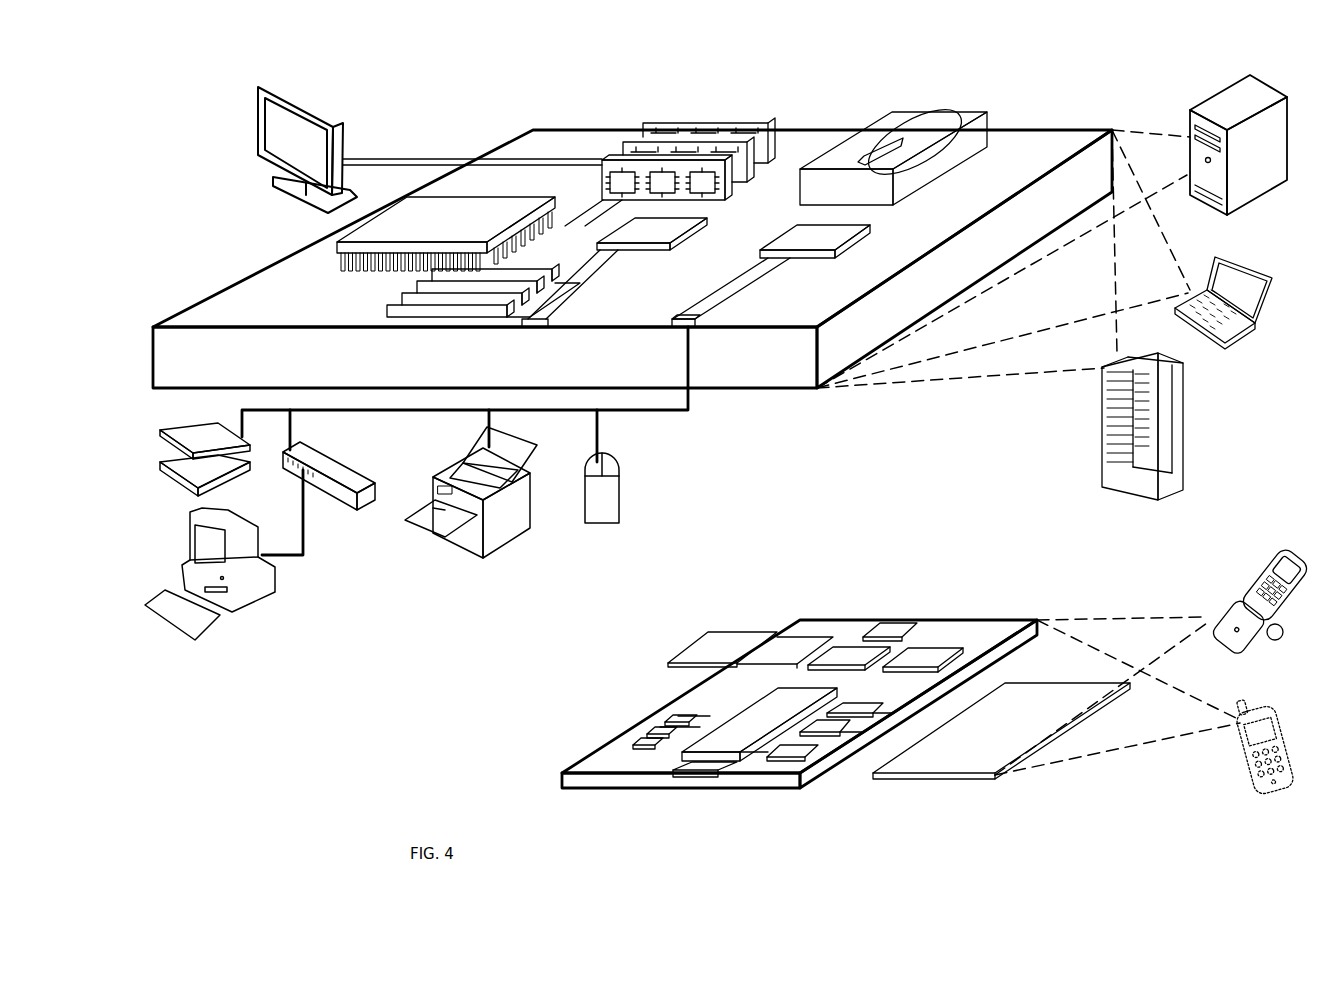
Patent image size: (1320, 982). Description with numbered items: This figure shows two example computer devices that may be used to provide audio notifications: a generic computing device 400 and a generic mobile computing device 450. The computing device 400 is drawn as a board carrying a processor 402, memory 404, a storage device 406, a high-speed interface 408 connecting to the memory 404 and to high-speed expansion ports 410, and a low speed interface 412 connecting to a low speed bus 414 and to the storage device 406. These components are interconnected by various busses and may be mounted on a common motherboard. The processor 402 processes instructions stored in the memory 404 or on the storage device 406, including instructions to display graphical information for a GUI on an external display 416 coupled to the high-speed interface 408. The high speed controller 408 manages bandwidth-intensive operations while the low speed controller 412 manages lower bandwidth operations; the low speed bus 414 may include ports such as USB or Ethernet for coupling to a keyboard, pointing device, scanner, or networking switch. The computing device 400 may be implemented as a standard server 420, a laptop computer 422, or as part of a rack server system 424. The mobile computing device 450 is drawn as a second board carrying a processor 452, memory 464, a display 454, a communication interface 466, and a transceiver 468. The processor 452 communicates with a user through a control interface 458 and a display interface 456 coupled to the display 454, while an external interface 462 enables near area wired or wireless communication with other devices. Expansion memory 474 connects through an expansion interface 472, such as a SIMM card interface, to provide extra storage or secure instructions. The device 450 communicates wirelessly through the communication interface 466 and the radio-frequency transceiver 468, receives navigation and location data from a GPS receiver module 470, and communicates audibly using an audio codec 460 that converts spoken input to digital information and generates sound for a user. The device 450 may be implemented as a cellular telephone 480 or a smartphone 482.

The computing device 400 is at (460, 103).
The processor 402 is at (337, 250).
The memory 404 is at (662, 122).
The storage device 406 is at (892, 113).
The high-speed interface 408 is at (630, 232).
The high-speed expansion ports 410 is at (410, 300).
The low speed interface 412 is at (813, 235).
The low speed bus 414 is at (701, 329).
The display 416 is at (258, 92).
The standard server 420 is at (1190, 113).
The laptop computer 422 is at (1216, 257).
The rack server system 424 is at (1103, 452).
The mobile computer device 450 is at (780, 598).
The processor 452 is at (737, 757).
The display 454 is at (997, 775).
The display interface 456 is at (806, 758).
The control interface 458 is at (838, 738).
The audio codec 460 is at (855, 714).
The external interface 462 is at (698, 770).
The memory 464 is at (653, 740).
The communication interface 466 is at (852, 655).
The transceiver 468 is at (924, 650).
The GPS receiver module 470 is at (887, 623).
The expansion interface 472 is at (777, 634).
The expansion memory 474 is at (713, 631).
The cellular telephone 480 is at (1262, 558).
The smartphone 482 is at (1246, 700).